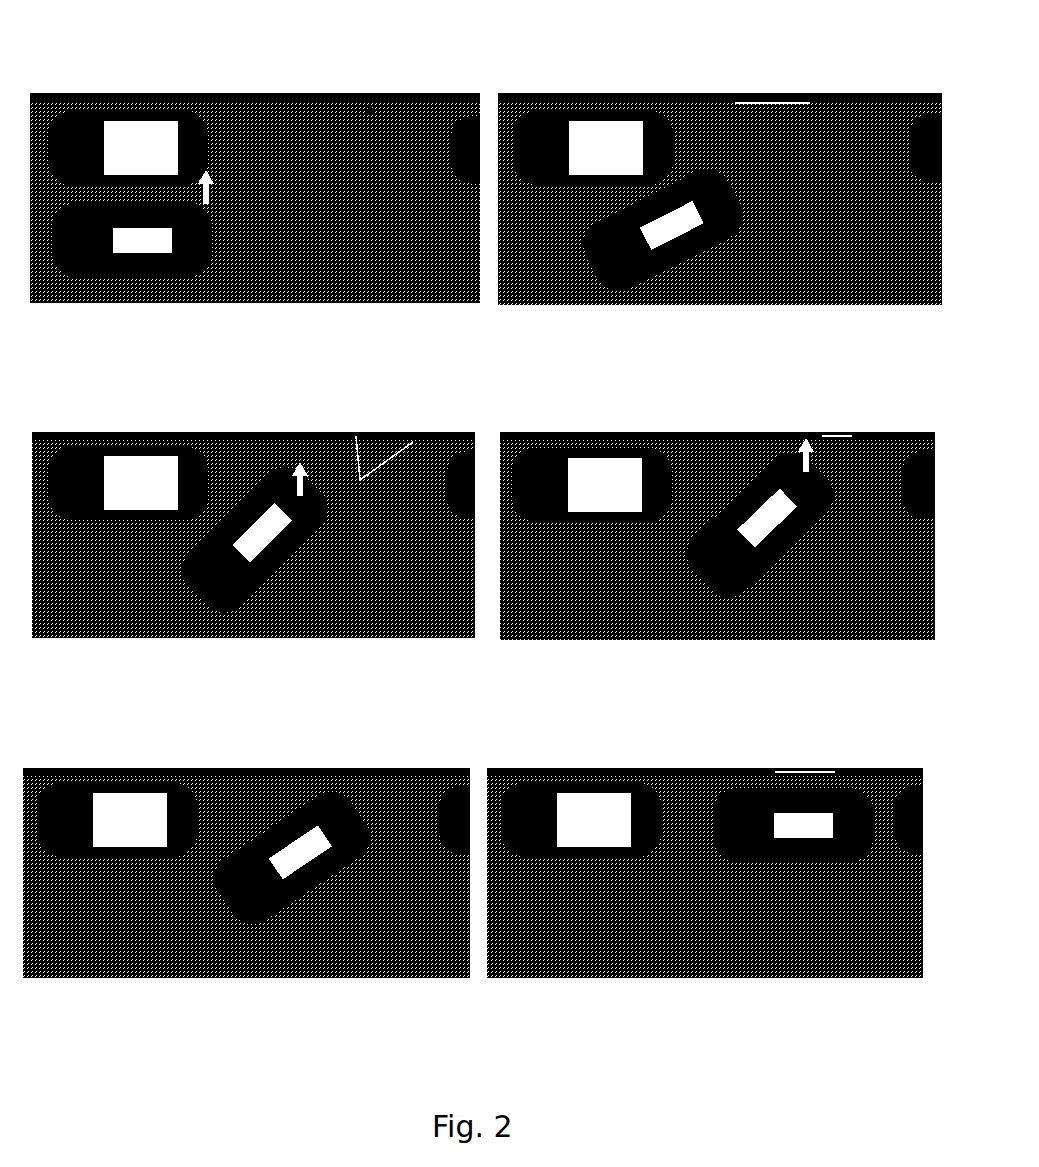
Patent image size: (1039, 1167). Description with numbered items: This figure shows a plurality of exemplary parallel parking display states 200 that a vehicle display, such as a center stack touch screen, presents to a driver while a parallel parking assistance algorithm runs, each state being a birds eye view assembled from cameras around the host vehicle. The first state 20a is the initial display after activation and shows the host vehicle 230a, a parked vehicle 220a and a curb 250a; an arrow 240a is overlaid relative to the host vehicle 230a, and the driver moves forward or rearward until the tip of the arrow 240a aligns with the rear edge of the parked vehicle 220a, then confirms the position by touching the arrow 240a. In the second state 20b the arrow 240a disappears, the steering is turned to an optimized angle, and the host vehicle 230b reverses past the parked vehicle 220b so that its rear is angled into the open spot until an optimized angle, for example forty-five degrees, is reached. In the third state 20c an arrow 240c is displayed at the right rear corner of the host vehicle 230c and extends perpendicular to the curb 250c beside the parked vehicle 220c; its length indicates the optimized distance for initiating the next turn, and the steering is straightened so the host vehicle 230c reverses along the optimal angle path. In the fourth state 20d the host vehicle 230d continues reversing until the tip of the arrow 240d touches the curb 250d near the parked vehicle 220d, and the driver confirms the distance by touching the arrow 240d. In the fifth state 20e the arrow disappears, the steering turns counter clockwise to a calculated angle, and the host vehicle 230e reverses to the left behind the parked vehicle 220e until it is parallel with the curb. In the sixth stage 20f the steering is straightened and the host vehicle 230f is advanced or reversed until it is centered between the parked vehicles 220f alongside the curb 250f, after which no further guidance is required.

The parallel parking display states 200 is at (505, 28).
The first state 20a is at (177, 82).
The second state 20b is at (602, 86).
The third state 20c is at (146, 423).
The fourth state 20d is at (654, 422).
The fifth state 20e is at (91, 760).
The sixth stage 20f is at (656, 758).
The parked vehicle 220a is at (128, 148).
The parked vehicle 220b is at (593, 148).
The parked vehicle 220c is at (128, 483).
The parked vehicle 220d is at (592, 485).
The parked vehicle 220e is at (117, 820).
The parked vehicles 220f is at (581, 820).
The host vehicle 230a is at (132, 240).
The host vehicle 230b is at (663, 230).
The host vehicle 230c is at (254, 539).
The host vehicle 230d is at (760, 525).
The host vehicle 230e is at (292, 858).
The host vehicle 230f is at (793, 825).
The arrow 240a is at (217, 192).
The arrow 240c is at (318, 478).
The arrow 240d is at (818, 458).
The curb 250a is at (385, 154).
The curb 250c is at (408, 430).
The curb 250d is at (837, 431).
The curb 250f is at (805, 745).